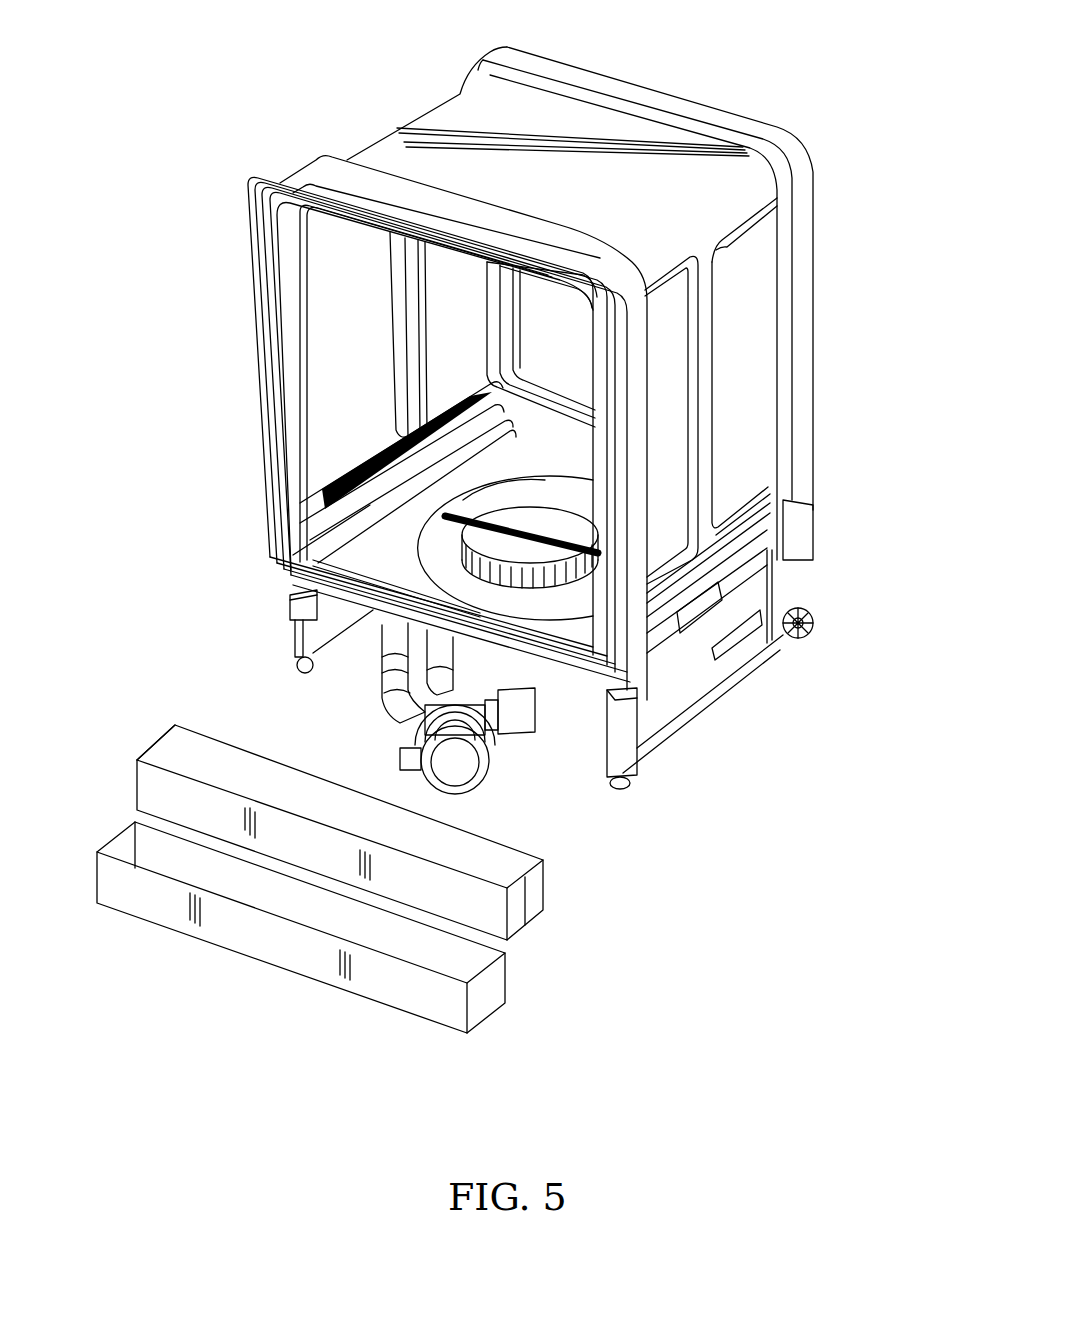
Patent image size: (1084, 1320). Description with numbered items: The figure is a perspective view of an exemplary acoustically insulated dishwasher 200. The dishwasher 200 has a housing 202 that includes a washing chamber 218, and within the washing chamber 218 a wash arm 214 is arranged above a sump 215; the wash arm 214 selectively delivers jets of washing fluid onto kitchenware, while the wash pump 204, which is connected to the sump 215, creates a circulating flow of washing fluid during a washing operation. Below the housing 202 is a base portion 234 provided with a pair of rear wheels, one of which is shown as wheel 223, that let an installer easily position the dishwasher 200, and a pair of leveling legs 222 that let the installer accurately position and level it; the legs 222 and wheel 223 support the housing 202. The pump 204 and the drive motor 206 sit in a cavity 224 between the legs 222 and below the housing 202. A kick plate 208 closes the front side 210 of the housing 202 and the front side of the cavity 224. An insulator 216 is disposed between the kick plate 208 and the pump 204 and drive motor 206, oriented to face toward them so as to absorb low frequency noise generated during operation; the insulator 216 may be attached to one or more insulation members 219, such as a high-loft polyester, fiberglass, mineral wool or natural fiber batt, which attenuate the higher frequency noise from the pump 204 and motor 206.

The acoustically insulated dishwasher 200 is at (676, 88).
The housing 202 is at (755, 360).
The pump 204 is at (462, 778).
The drive motor 206 is at (515, 740).
The kick plate 208 is at (487, 1000).
The front side 210 is at (300, 572).
The wash arm 214 is at (463, 500).
The sump 215 is at (318, 488).
The insulator 216 is at (548, 890).
The washing chamber 218 is at (322, 485).
The insulation member 219 is at (152, 755).
The legs 222 is at (300, 670).
The wheel 223 is at (813, 617).
The cavity 224 is at (377, 645).
The base portion 234 is at (708, 678).